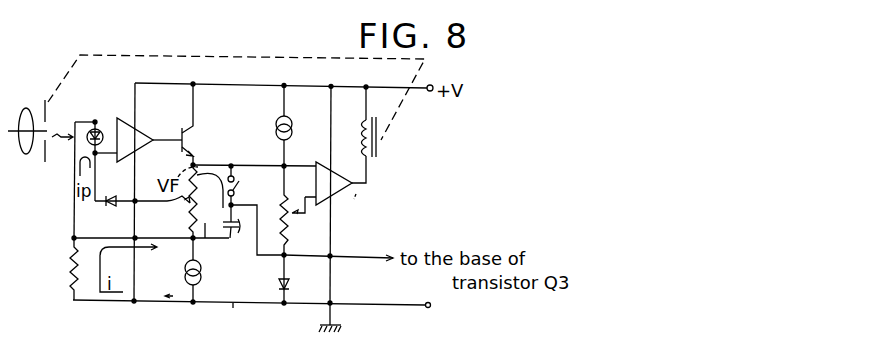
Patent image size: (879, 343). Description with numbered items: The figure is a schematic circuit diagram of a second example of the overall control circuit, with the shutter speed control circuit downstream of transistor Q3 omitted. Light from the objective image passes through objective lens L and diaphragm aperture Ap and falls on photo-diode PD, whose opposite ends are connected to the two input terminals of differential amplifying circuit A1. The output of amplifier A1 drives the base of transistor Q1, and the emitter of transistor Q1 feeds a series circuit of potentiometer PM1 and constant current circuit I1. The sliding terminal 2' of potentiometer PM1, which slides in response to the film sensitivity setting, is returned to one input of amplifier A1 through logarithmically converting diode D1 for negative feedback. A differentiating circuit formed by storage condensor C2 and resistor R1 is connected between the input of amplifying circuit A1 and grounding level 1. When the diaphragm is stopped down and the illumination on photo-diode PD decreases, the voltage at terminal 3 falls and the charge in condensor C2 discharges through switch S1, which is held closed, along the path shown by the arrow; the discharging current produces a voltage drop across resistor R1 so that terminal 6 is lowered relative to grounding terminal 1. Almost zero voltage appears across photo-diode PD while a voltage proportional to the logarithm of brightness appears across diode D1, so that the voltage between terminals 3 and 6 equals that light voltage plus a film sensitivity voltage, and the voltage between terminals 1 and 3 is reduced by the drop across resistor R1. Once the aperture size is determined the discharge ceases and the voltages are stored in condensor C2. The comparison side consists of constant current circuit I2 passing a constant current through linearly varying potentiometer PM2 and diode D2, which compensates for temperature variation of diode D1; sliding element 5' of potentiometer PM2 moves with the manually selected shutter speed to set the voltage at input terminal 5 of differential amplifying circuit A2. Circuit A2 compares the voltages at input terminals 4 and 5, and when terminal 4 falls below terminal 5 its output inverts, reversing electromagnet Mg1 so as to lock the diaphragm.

The grounding terminal 1 is at (233, 319).
The sliding terminal of potentiometer PM1 2' is at (162, 210).
The terminal 3 is at (197, 195).
The input terminal of amplifier A2 4 is at (297, 166).
The input terminal of amplifier A2 5 is at (304, 194).
The sliding element of potentiometer PM2 5' is at (315, 222).
The terminal 6 is at (87, 237).
The objective lens L is at (27, 144).
The diaphragm aperture Ap is at (59, 141).
The photo-diode PD is at (95, 168).
The differential amplifying circuit A1 is at (149, 140).
The transistor Q1 is at (201, 125).
The potentiometer PM1 is at (216, 177).
The logarithmically converting diode D1 is at (115, 213).
The resistor R1 is at (61, 269).
The constant current circuit I1 is at (192, 271).
The switch S1 is at (244, 185).
The storage condensor C2 is at (253, 234).
The constant current circuit I2 is at (294, 126).
The differential amplifying circuit A2 is at (341, 194).
The potentiometer PM2 is at (336, 213).
The diode D2 is at (297, 280).
The electromagnet Mg1 is at (391, 123).